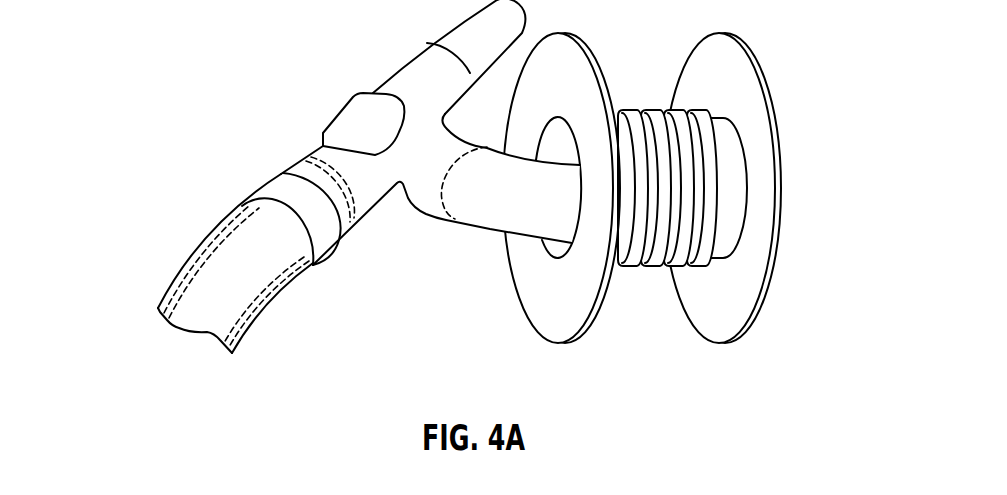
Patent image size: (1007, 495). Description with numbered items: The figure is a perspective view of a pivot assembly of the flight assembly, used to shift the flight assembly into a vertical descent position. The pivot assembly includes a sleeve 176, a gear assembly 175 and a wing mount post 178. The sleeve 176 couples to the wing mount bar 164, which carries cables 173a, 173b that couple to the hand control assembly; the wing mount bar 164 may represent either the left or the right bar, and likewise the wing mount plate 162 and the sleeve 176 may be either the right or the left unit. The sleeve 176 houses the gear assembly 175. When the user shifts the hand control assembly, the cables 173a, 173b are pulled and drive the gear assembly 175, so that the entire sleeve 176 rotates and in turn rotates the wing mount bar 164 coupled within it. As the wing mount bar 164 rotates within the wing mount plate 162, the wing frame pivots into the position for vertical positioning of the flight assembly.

The wing mount plate 162 is at (580, 95).
The wing mount bar 164 is at (273, 245).
The cable 173a is at (253, 320).
The cable 173b is at (192, 278).
The gear assembly 175 is at (307, 167).
The sleeve 176 is at (417, 72).
The wing mount post 178 is at (493, 213).